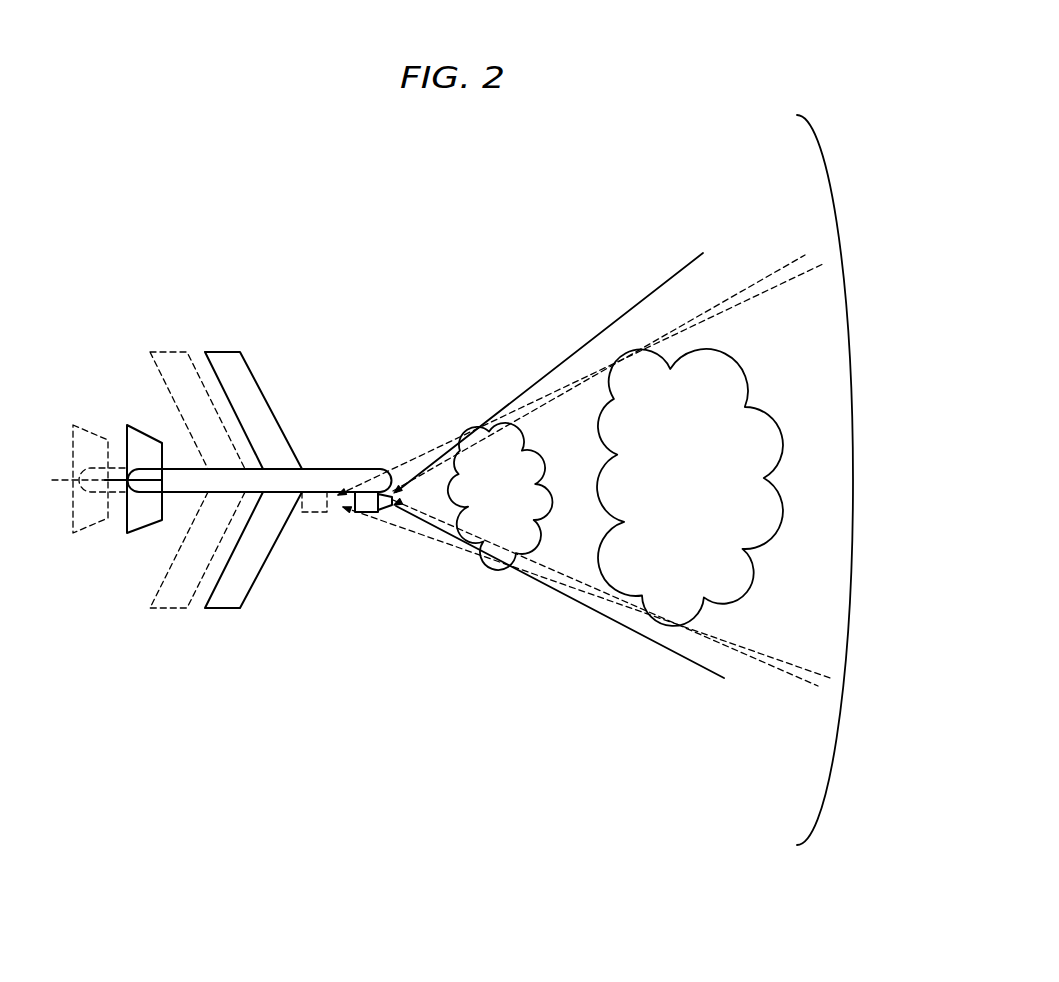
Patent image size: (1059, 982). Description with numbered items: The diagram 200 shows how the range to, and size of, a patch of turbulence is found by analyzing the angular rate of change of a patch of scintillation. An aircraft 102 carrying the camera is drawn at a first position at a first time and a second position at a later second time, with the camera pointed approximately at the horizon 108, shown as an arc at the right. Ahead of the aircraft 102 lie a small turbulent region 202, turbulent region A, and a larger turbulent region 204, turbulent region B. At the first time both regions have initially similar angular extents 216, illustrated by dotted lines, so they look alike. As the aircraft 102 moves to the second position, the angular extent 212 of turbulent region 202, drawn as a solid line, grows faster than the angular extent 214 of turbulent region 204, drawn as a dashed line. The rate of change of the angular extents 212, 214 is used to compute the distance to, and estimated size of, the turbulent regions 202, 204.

The scintillation sensing scenario 200 is at (165, 243).
The aircraft 102 is at (222, 610).
The horizon 108 is at (831, 192).
The turbulent region A 202 is at (485, 432).
The turbulent region B 204 is at (608, 375).
The angular extent of turbulent region A 212 is at (535, 578).
The angular extent of turbulent region B 214 is at (780, 662).
The initial angular extents 216 is at (404, 530).